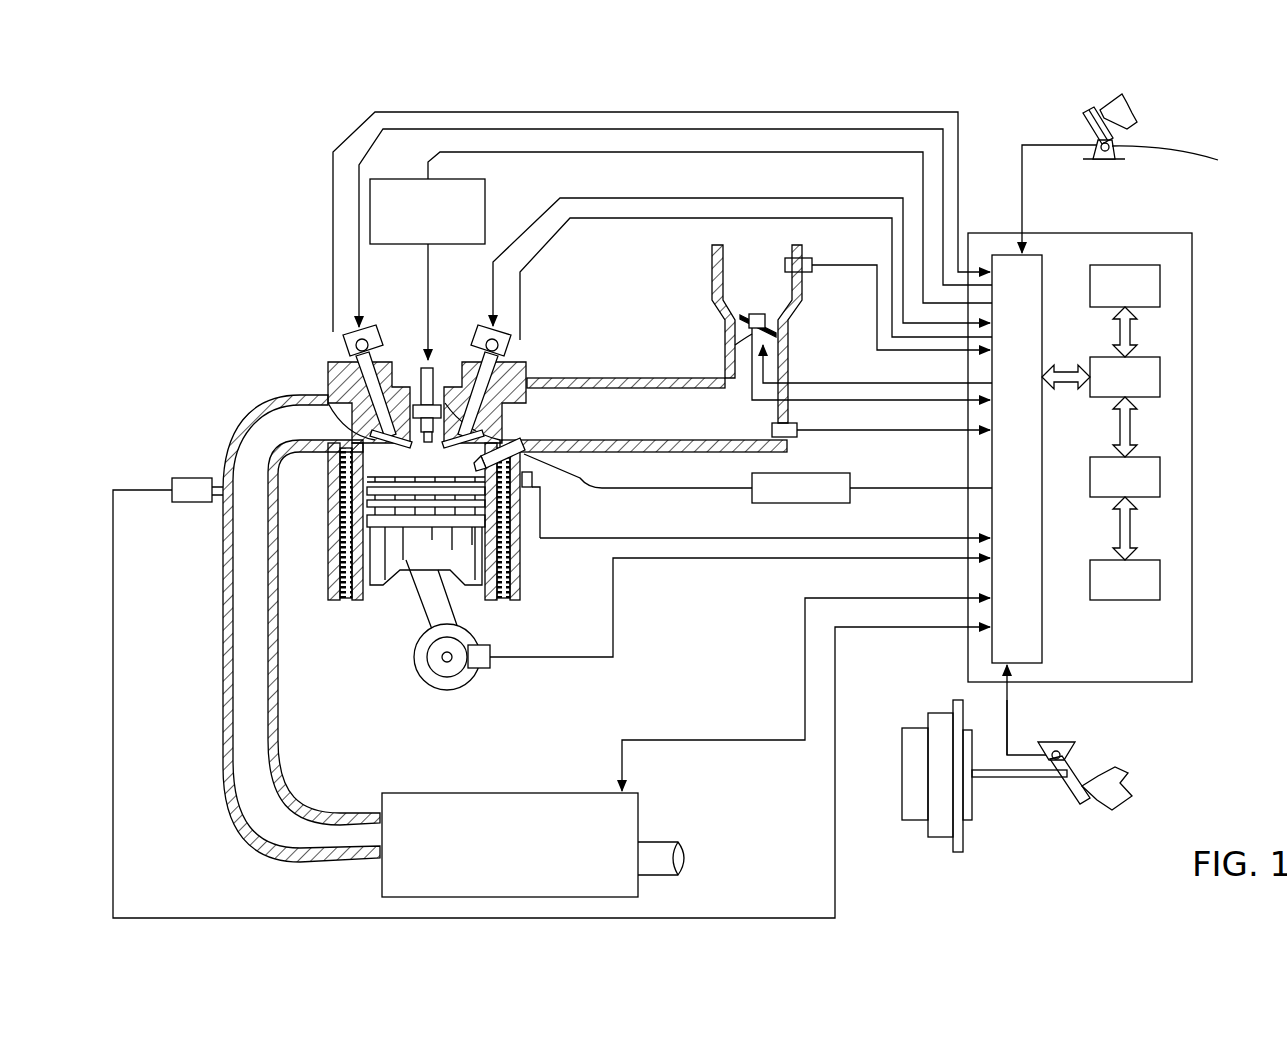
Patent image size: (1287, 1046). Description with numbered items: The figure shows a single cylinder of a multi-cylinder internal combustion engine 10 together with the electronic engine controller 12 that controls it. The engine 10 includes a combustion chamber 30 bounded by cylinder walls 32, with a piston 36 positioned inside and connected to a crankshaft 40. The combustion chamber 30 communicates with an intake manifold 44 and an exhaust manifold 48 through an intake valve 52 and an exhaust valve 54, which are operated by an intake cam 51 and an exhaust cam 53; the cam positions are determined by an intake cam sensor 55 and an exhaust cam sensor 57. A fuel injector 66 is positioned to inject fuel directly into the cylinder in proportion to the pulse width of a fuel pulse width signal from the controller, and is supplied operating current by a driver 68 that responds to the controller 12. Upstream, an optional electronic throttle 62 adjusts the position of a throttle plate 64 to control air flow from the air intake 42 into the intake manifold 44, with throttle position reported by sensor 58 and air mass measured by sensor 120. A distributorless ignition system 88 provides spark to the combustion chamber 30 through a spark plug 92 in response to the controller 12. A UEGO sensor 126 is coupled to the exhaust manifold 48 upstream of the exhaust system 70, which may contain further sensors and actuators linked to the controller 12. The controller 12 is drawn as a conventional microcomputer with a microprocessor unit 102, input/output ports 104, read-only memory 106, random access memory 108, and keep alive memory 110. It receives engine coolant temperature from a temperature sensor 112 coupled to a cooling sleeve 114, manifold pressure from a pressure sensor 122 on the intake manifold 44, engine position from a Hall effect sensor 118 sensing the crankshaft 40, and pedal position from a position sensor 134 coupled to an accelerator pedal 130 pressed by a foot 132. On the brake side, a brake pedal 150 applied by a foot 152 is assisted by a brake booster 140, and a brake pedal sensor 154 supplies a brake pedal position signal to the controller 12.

The internal combustion engine 10 is at (262, 316).
The electronic engine controller 12 is at (1192, 235).
The combustion chamber 30 is at (348, 553).
The cylinder walls 32 is at (372, 585).
The piston 36 is at (412, 585).
The crankshaft 40 is at (432, 675).
The air intake 42 is at (744, 290).
The intake manifold 44 is at (681, 428).
The exhaust manifold 48 is at (285, 432).
The intake cam 51 is at (480, 326).
The intake valve 52 is at (467, 427).
The exhaust cam 53 is at (372, 326).
The exhaust valve 54 is at (328, 395).
The intake cam sensor 55 is at (504, 346).
The exhaust cam sensor 57 is at (345, 342).
The throttle position sensor 58 is at (735, 345).
The electronic throttle 62 is at (766, 321).
The throttle plate 64 is at (740, 320).
The fuel injector 66 is at (527, 462).
The driver 68 is at (780, 503).
The exhaust system 70 is at (522, 793).
The distributorless ignition system 88 is at (387, 179).
The spark plug 92 is at (436, 360).
The microprocessor unit 102 is at (1160, 380).
The input/output ports 104 is at (1044, 265).
The read-only memory 106 is at (1160, 287).
The random access memory 108 is at (1160, 475).
The keep alive memory 110 is at (1160, 577).
The temperature sensor 112 is at (540, 487).
The cooling sleeve 114 is at (505, 560).
The Hall effect sensor 118 is at (490, 650).
The air mass sensor 120 is at (807, 258).
The pressure sensor 122 is at (797, 437).
The Universal Exhaust Gas Oxygen (UEGO) sensor 126 is at (172, 486).
The accelerator pedal 130 is at (1087, 124).
The foot 132 is at (1130, 113).
The position sensor 134 is at (1182, 163).
The brake booster 140 is at (902, 820).
The brake pedal 150 is at (1082, 800).
The foot 152 is at (1117, 769).
The brake pedal sensor 154 is at (1047, 757).